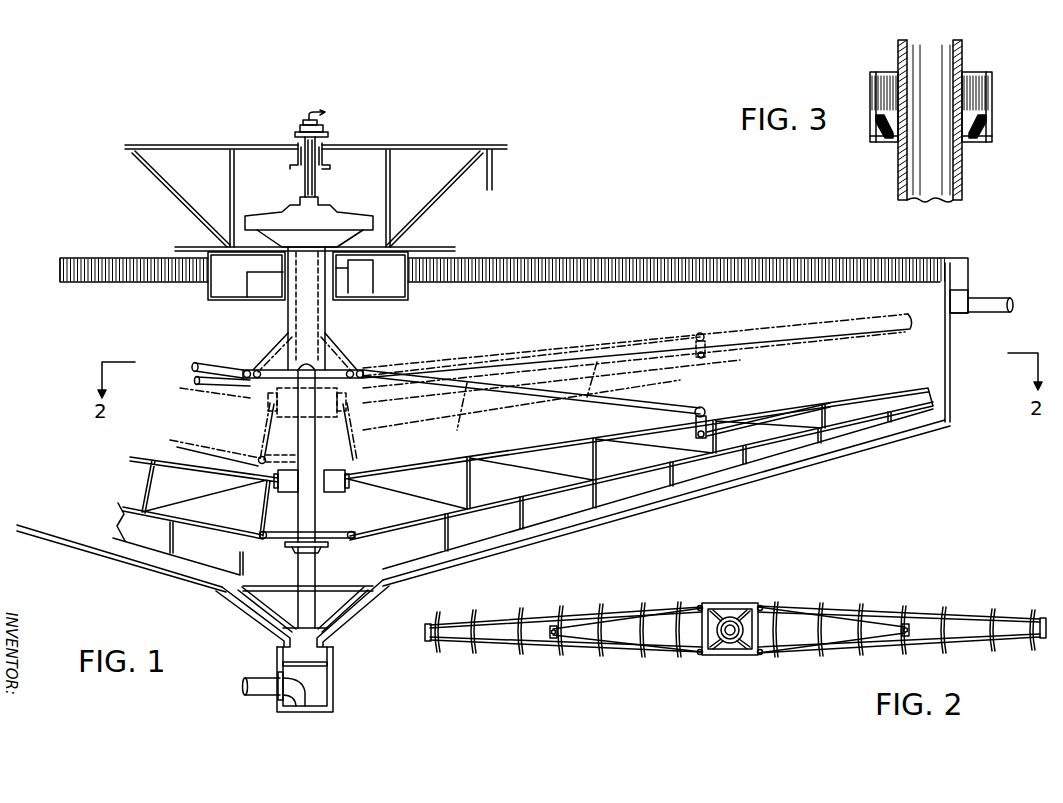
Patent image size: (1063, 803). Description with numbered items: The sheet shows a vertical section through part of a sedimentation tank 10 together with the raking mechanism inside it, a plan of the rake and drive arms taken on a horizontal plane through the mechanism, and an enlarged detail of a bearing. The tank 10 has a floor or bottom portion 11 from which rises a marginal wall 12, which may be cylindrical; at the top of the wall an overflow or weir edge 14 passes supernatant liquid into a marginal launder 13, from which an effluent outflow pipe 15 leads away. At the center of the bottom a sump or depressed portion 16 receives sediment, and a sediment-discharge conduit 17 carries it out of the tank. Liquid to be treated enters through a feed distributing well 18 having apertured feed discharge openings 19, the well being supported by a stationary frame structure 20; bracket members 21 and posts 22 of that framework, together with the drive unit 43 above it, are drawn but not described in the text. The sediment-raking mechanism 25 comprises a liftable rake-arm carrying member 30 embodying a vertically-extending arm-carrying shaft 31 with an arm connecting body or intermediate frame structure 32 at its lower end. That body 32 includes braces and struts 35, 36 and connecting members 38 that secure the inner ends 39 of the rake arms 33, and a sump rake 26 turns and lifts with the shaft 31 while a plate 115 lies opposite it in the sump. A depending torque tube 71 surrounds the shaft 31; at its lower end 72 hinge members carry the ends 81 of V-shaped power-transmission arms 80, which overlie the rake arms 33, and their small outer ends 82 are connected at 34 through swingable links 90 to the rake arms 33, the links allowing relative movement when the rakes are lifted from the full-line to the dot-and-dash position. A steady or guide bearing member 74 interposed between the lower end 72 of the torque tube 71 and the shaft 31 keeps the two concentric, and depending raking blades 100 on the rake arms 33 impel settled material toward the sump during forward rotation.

In FIG. 1, the sedimentation tank 10 is at (511, 452).
In FIG. 1, the floor or bottom portion 11 is at (893, 440).
In FIG. 1, the marginal wall 12 is at (993, 450).
In FIG. 1, the marginal launder 13 is at (955, 300).
In FIG. 1, the overflow or weir edge 14 is at (886, 259).
In FIG. 1, the effluent outflow pipe 15 is at (1000, 298).
In FIG. 1, the sump or depressed portion 16 is at (335, 645).
In FIG. 1, the sediment-discharge conduit 17 is at (262, 697).
In FIG. 1, the feed distributing well 18 is at (373, 273).
In FIG. 1, the feed discharge openings 19 is at (320, 275).
In FIG. 1, the frame structure 20 is at (425, 147).
In FIG. 1, the center bracket 21 is at (293, 168).
In FIG. 1, the support posts 22 is at (243, 237).
In FIG. 1, the sediment-raking mechanism 25 is at (241, 437).
In FIG. 1, the sump rake 26 is at (255, 615).
In FIG. 1, the liftable rake-arm carrying member 30 is at (241, 437).
In FIG. 1, the arm-carrying shaft 31 is at (300, 440).
In FIG. 2, the arm-carrying shaft 31 is at (734, 649).
In FIG. 3, the arm-carrying shaft 31 is at (963, 190).
In FIG. 1, the arm connecting body or intermediate frame structure 32 is at (334, 497).
In FIG. 1, the rake arms 33 is at (511, 427).
In FIG. 2, the rake arms 33 is at (492, 620).
In FIG. 1, the connection of power-transmission arms to rake arms 34 is at (718, 430).
In FIG. 1, the braces and struts 35 is at (337, 546).
In FIG. 1, the braces and struts 36 is at (340, 530).
In FIG. 1, the connecting members 38 is at (340, 462).
In FIG. 1, the inner ends of rake arms 39 is at (352, 466).
In FIG. 1, the drive motor 43 is at (317, 185).
In FIG. 2, the torque tube 71 is at (727, 643).
In FIG. 3, the torque tube 71 is at (851, 126).
In FIG. 1, the lower end of torque tube 72 is at (343, 393).
In FIG. 3, the lower end of torque tube 72 is at (878, 143).
In FIG. 1, the steady or guide bearing member 74 is at (272, 398).
In FIG. 3, the steady or guide bearing member 74 is at (982, 143).
In FIG. 2, the power-transmission arms 80 is at (653, 610).
In FIG. 1, the ends of power-transmission arms 81 is at (253, 368).
In FIG. 2, the ends of power-transmission arms 81 is at (761, 604).
In FIG. 1, the outer ends of power-transmission arms 82 is at (703, 408).
In FIG. 2, the outer ends of power-transmission arms 82 is at (552, 626).
In FIG. 1, the swingable links 90 is at (690, 420).
In FIG. 1, the raking blades 100 is at (770, 453).
In FIG. 2, the raking blades 100 is at (520, 650).
In FIG. 1, the scraper plate 115 is at (356, 617).